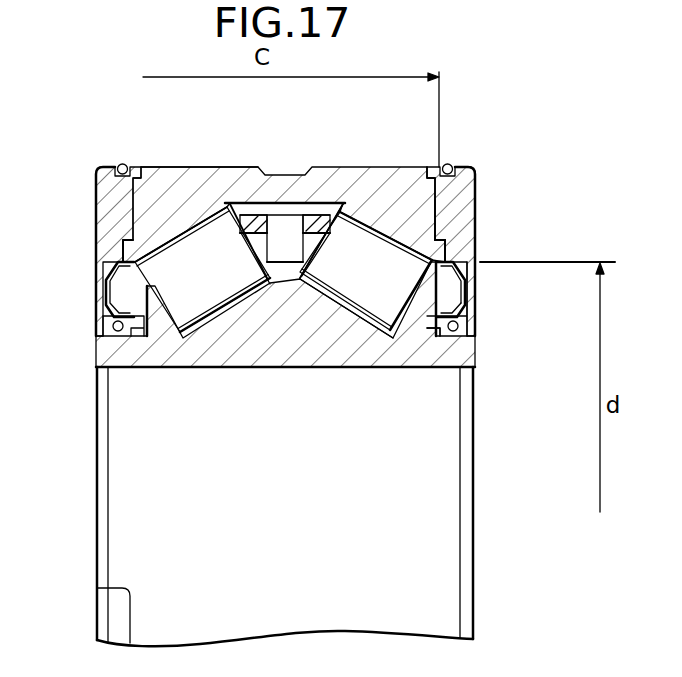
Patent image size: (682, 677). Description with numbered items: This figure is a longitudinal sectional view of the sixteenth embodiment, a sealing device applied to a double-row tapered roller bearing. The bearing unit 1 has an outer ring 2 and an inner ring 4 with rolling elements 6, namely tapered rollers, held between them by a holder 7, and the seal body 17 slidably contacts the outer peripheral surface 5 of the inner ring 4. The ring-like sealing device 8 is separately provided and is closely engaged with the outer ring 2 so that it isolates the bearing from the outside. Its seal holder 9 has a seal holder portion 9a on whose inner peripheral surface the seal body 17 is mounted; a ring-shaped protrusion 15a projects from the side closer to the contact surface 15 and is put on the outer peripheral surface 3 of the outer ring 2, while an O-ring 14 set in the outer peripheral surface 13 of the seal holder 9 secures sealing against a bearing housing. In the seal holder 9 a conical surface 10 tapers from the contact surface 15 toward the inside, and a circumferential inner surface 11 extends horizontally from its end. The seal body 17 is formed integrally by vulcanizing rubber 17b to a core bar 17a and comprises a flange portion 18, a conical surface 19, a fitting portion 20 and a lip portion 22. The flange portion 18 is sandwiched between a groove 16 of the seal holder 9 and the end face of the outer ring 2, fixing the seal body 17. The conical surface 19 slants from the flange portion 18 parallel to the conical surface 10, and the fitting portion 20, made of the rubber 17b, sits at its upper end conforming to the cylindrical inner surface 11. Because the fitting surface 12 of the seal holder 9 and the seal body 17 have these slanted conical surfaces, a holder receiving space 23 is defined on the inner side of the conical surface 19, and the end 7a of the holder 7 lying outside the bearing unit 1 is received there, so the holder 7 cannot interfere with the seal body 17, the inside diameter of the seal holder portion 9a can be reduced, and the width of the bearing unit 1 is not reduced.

The bearing unit 1 is at (362, 150).
The outer ring 2 is at (379, 167).
The outer peripheral surface 3 is at (440, 207).
The inner ring 4 is at (252, 368).
The outer peripheral surface 5 is at (470, 370).
The rolling element 6 is at (340, 345).
The holder 7 is at (428, 283).
The end of the holder 7a is at (418, 352).
The sealing device 8 is at (76, 206).
The seal holder 9 is at (116, 166).
The seal holder portion 9a is at (492, 268).
The conical surface 10 is at (428, 262).
The circumferential inner surface 11 is at (470, 258).
The fitting surface 12 is at (118, 259).
The outer peripheral surface 13 is at (478, 162).
The O-ring 14 is at (448, 163).
The contact surface 15 is at (426, 167).
The protrusion 15a is at (430, 166).
The groove 16 is at (373, 167).
The seal body 17 is at (103, 326).
The core bar 17a is at (465, 306).
The rubber 17b is at (462, 322).
The flange portion 18 is at (450, 228).
The conical surface 19 is at (448, 243).
The fitting portion 20 is at (467, 290).
The lip portion 22 is at (462, 345).
The holder receiving space 23 is at (112, 292).